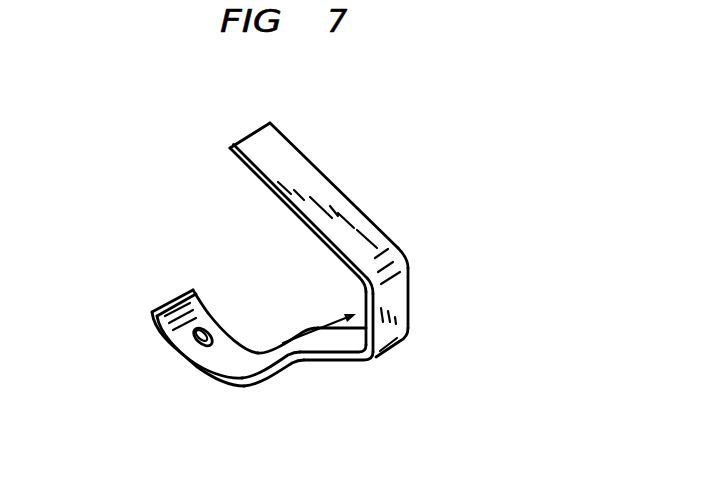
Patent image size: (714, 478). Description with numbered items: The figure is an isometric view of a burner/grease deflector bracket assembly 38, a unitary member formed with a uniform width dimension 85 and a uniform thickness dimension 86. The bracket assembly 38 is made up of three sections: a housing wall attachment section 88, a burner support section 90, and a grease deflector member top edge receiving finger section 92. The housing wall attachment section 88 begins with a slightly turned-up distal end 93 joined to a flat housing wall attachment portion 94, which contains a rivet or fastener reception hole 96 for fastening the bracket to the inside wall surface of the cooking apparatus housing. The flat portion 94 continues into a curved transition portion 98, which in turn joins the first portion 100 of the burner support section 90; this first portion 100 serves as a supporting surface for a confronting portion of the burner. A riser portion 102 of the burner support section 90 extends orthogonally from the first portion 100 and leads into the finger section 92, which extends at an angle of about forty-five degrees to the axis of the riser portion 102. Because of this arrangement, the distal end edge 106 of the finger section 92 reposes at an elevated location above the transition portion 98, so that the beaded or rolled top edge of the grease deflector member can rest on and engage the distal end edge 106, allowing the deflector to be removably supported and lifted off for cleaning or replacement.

The burner/grease deflector bracket assembly 38 is at (471, 231).
The width dimension 85 is at (269, 376).
The thickness dimension 86 is at (337, 302).
The housing wall attachment section 88 is at (211, 412).
The burner support section 90 is at (389, 408).
The grease deflector member top edge receiving finger section 92 is at (299, 104).
The turned-up distal end 93 is at (185, 291).
The flat housing wall attachment portion 94 is at (203, 328).
The rivet or fastener reception hole 96 is at (208, 329).
The curved transition portion 98 is at (223, 352).
The first portion 100 is at (352, 337).
The riser portion 102 is at (408, 333).
The distal end edge 106 is at (247, 138).